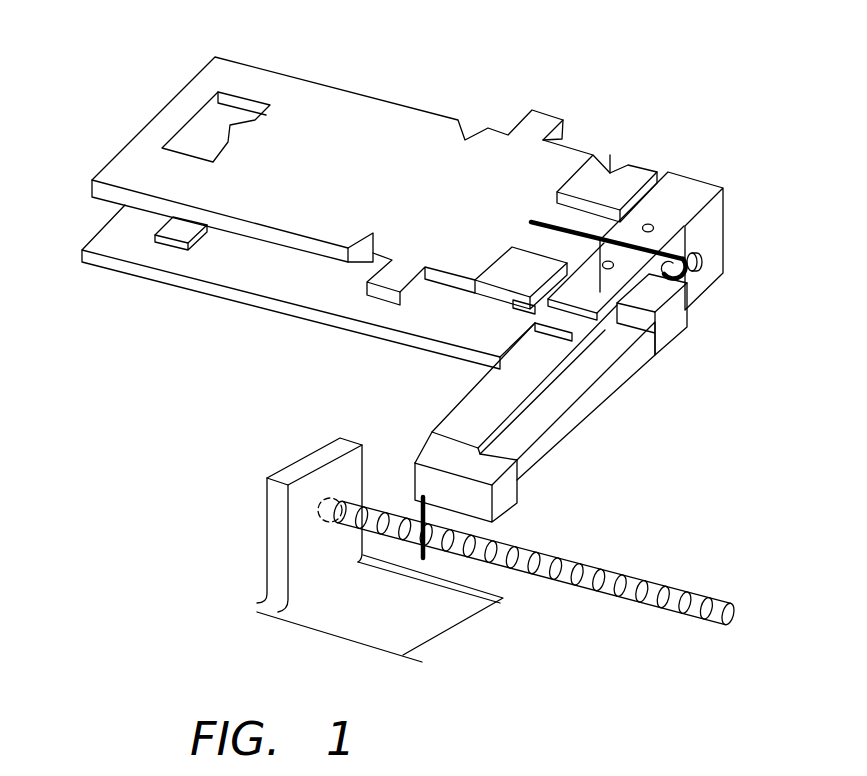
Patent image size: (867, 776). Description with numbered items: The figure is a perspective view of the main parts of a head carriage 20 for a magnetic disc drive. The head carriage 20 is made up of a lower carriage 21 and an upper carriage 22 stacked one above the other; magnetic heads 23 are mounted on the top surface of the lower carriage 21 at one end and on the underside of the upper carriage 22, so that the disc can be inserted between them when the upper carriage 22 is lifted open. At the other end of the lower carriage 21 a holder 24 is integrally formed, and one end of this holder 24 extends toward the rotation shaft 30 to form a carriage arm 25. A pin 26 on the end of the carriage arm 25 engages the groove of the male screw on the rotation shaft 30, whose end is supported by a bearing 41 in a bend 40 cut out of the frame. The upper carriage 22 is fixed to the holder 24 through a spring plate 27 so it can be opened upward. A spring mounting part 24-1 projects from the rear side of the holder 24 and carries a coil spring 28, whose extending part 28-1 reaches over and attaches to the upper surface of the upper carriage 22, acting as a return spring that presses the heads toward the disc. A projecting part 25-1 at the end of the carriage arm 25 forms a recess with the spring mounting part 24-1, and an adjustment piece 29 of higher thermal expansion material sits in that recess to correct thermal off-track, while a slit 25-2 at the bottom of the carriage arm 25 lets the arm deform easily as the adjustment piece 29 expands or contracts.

The head carriage 20 is at (408, 98).
The lower carriage 21 is at (253, 307).
The upper carriage 22 is at (315, 97).
The magnetic head 23 is at (173, 243).
The holder 24 is at (607, 318).
The spring mounting part 24-1 is at (672, 318).
The carriage arm 25 is at (462, 422).
The projecting part 25-1 is at (505, 488).
The slit 25-2 is at (548, 325).
The pin 26 is at (430, 507).
The spring plate 27 is at (678, 188).
The coil spring 28 is at (693, 270).
The extending part 28-1 is at (535, 222).
The adjustment piece 29 is at (560, 430).
The rotation shaft 30 is at (640, 578).
The bend 40 is at (277, 538).
The bearing 41 is at (330, 490).